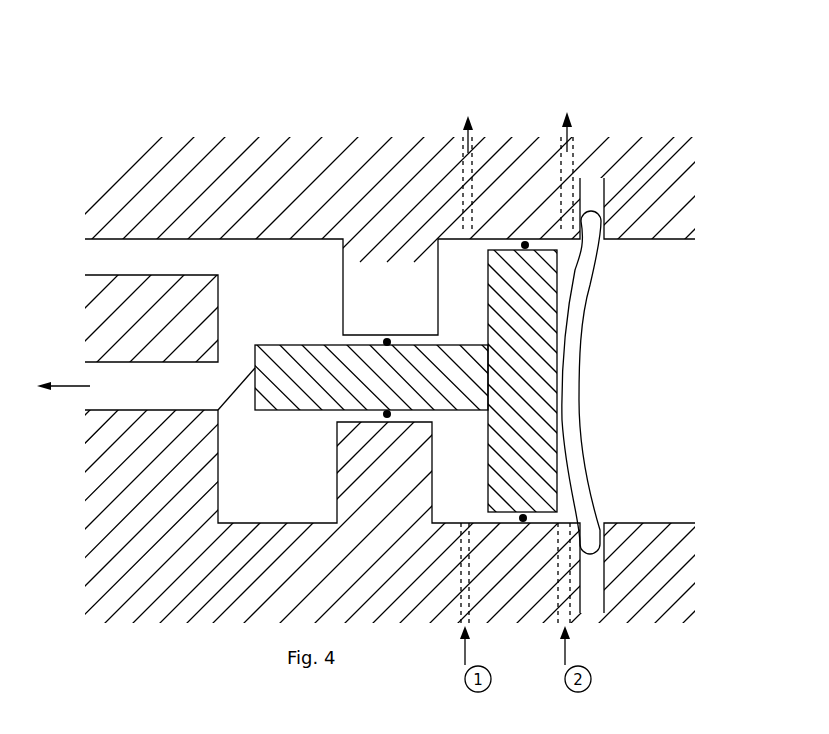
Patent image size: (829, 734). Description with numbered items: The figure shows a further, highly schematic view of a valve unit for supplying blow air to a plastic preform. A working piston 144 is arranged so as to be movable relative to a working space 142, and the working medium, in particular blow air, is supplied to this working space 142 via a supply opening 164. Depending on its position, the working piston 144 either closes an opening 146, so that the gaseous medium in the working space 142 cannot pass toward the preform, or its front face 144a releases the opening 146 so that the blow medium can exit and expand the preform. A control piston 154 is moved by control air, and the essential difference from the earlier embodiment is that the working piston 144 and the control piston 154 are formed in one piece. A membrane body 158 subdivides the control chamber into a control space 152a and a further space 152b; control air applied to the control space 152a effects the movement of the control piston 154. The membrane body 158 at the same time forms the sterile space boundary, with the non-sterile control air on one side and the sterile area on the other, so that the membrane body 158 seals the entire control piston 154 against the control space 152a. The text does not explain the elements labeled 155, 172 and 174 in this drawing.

The working space 142 is at (283, 253).
The working piston 144 is at (312, 365).
The front face 144a is at (218, 410).
The opening 146 is at (90, 386).
The control space 152a is at (651, 383).
The further space 152b is at (461, 478).
The control piston 154 is at (517, 323).
The seal 155 is at (525, 245).
The membrane body 158 is at (603, 233).
The supply opening 164 is at (135, 248).
The inlet passage 172 is at (460, 608).
The housing wall 174 is at (593, 598).